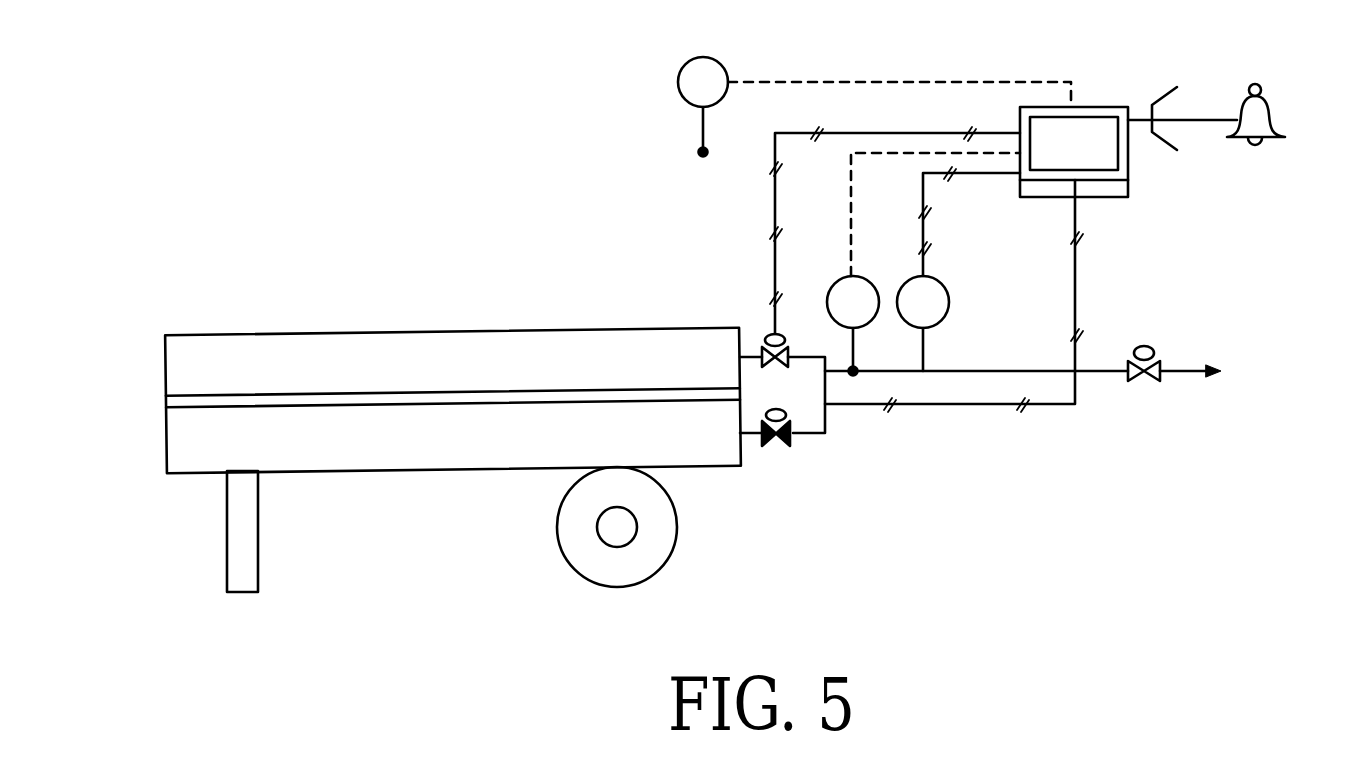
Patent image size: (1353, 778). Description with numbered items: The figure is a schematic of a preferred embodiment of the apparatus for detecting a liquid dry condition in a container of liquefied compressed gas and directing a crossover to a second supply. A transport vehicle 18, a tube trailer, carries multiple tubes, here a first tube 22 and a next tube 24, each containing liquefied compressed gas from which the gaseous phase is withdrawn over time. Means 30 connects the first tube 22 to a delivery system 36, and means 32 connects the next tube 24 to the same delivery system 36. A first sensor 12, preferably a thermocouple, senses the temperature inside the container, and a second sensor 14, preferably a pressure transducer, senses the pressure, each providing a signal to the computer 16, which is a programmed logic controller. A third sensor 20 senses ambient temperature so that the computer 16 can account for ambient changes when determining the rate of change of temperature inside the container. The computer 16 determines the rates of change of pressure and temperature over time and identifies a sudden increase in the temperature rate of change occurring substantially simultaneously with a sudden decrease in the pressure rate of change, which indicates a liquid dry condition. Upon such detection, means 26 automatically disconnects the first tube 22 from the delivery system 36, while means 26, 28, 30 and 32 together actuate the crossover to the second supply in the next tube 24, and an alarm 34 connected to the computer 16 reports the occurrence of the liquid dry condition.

The first sensor 12 is at (847, 276).
The second sensor 14 is at (948, 290).
The computer 16 is at (1085, 107).
The transport vehicle 18 is at (253, 333).
The third sensor 20 is at (679, 71).
The first tube 22 is at (166, 360).
The next tube 24 is at (166, 430).
The means for automatically disconnecting the first tube 26 is at (775, 196).
The means for actuating a crossover 28 is at (1075, 285).
The means for connecting the first tube 30 is at (765, 337).
The means for connecting the next tube 32 is at (793, 436).
The alarm 34 is at (1283, 117).
The delivery system 36 is at (1097, 373).